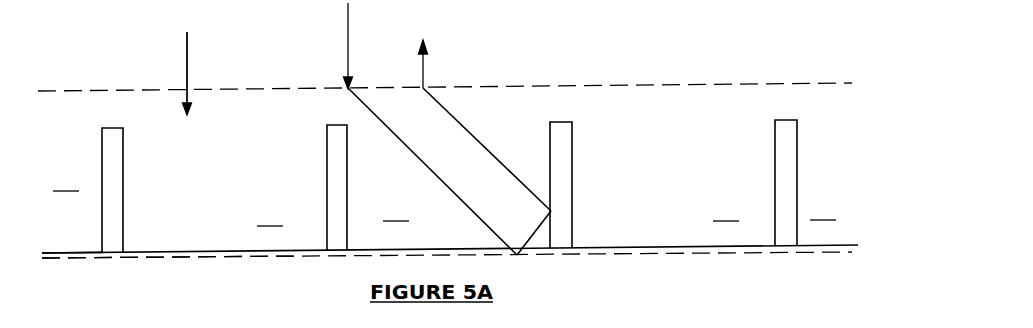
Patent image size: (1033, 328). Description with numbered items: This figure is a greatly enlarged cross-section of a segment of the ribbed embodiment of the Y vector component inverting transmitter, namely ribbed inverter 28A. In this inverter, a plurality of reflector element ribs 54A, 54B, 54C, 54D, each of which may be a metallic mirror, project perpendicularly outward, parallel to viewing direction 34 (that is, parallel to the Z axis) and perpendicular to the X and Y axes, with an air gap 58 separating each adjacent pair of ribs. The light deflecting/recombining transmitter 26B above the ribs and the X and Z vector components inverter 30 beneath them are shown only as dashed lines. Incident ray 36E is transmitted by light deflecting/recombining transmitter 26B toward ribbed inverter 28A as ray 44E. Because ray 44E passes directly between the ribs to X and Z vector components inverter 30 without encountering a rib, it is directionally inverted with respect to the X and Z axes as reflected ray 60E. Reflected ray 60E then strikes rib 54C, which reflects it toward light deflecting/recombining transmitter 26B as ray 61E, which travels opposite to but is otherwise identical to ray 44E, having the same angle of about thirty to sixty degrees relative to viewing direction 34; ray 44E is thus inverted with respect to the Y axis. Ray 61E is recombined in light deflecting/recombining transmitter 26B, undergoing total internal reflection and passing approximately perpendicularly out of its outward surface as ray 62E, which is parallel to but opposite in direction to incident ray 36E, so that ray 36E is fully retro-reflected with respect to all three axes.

The viewing direction 34 is at (185, 72).
The light deflecting/recombining transmitter 26B is at (263, 88).
The incident ray 36E is at (350, 40).
The ray 62E is at (425, 72).
The ray 61E is at (442, 106).
The ray 44E is at (391, 131).
The reflected ray 60E is at (521, 240).
The rib 54A is at (117, 229).
The rib 54B is at (328, 183).
The rib 54C is at (563, 232).
The rib 54D is at (783, 177).
The air gap 58 is at (444, 198).
The ribbed inverter 28A is at (88, 230).
The X and Z vector components inverter 30 is at (266, 258).